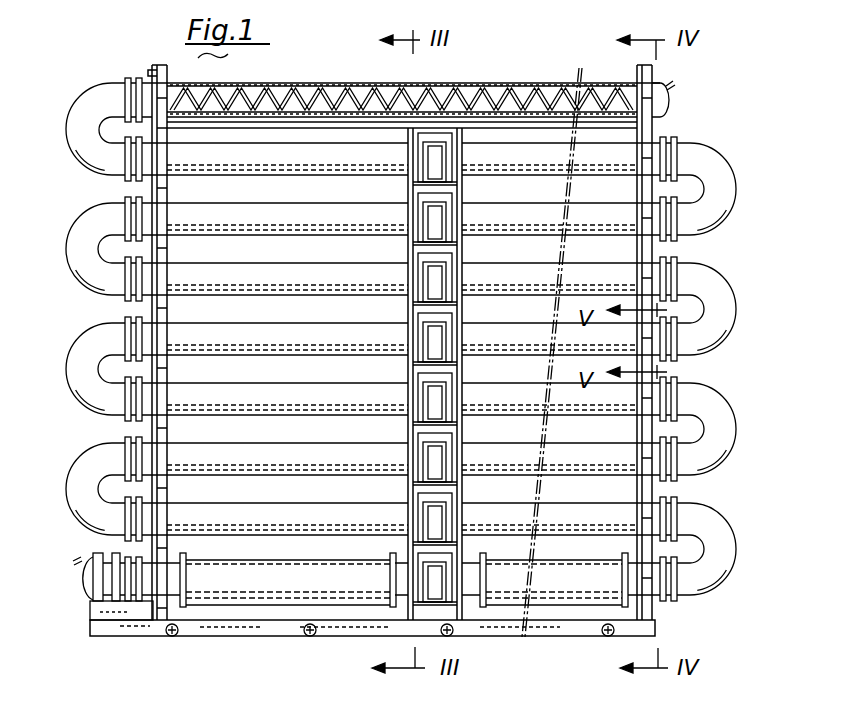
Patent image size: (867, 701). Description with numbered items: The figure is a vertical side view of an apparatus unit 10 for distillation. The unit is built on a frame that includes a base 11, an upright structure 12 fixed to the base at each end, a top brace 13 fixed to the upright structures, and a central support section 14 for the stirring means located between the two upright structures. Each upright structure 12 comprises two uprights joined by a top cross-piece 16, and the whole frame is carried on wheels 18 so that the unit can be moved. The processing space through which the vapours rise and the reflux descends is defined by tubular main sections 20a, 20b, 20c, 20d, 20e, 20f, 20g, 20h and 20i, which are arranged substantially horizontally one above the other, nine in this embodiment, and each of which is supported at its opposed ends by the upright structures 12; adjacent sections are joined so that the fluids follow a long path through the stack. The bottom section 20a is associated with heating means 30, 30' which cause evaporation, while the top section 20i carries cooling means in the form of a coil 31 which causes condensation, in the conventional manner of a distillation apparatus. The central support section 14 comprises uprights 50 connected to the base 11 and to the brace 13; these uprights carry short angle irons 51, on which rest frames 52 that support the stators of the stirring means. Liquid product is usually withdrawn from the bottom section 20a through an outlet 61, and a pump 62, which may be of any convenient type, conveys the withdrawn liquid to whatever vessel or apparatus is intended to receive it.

The apparatus unit 10 is at (670, 128).
The base 11 is at (590, 637).
The upright structure 12 is at (148, 552).
The top brace 13 is at (634, 131).
The central support section 14 is at (400, 432).
The top cross-piece 16 is at (762, 696).
The wheels 18 is at (177, 640).
The bottom main section 20a is at (625, 576).
The tubular main section 20b is at (623, 515).
The tubular main section 20c is at (625, 455).
The tubular main section 20d is at (622, 412).
The tubular main section 20e is at (620, 338).
The tubular main section 20f is at (620, 278).
The tubular main section 20g is at (625, 228).
The tubular main section 20h is at (625, 168).
The top main section 20i is at (598, 88).
The heating means 30 is at (554, 624).
The heating means 30' is at (288, 621).
The coil 31 is at (302, 88).
The uprights 50 is at (410, 607).
The angle irons 51 is at (432, 603).
The frame 52 is at (437, 522).
The outlet 61 is at (79, 562).
The pump 62 is at (102, 592).